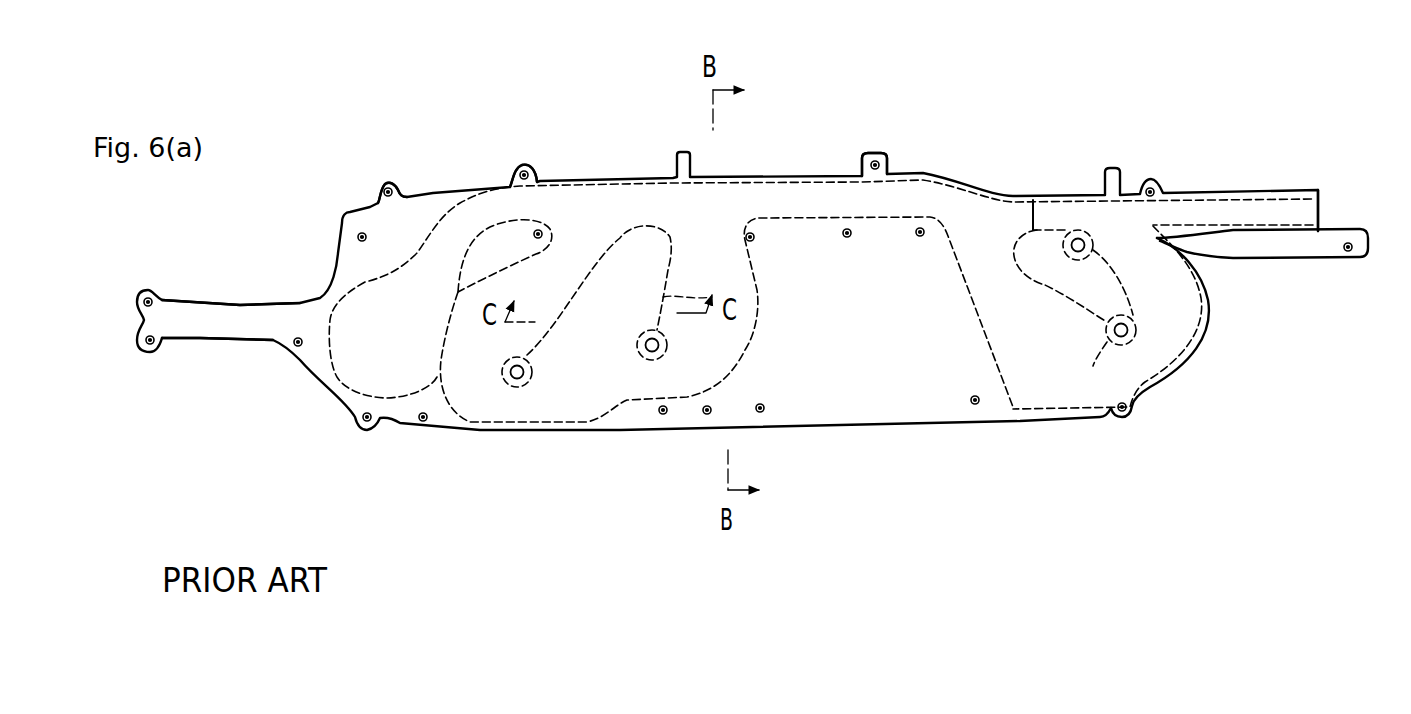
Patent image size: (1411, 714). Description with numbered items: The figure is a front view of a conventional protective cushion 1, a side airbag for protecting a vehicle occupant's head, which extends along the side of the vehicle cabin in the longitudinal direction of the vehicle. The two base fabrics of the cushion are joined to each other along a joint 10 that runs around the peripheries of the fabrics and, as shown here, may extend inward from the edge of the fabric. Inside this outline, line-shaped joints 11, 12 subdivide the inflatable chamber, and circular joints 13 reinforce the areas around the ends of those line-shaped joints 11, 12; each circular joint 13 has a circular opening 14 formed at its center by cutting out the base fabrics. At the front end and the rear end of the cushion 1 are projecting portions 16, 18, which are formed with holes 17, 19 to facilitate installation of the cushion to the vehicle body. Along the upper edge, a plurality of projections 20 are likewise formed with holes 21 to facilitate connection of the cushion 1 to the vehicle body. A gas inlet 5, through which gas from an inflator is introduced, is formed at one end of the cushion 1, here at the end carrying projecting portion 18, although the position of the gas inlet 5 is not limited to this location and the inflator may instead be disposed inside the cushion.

The protective cushion 1 is at (1124, 146).
The gas inlet 5 is at (1328, 196).
The joint 10 is at (333, 362).
The joint 11 is at (562, 315).
The joint 12 is at (1033, 200).
The circular joint 13 is at (505, 378).
The circular opening 14 is at (638, 342).
The projecting portion 16 is at (198, 318).
The hole 17 is at (137, 298).
The projecting portion 18 is at (1313, 254).
The hole 19 is at (1353, 258).
The projection 20 is at (515, 170).
The hole 21 is at (385, 183).